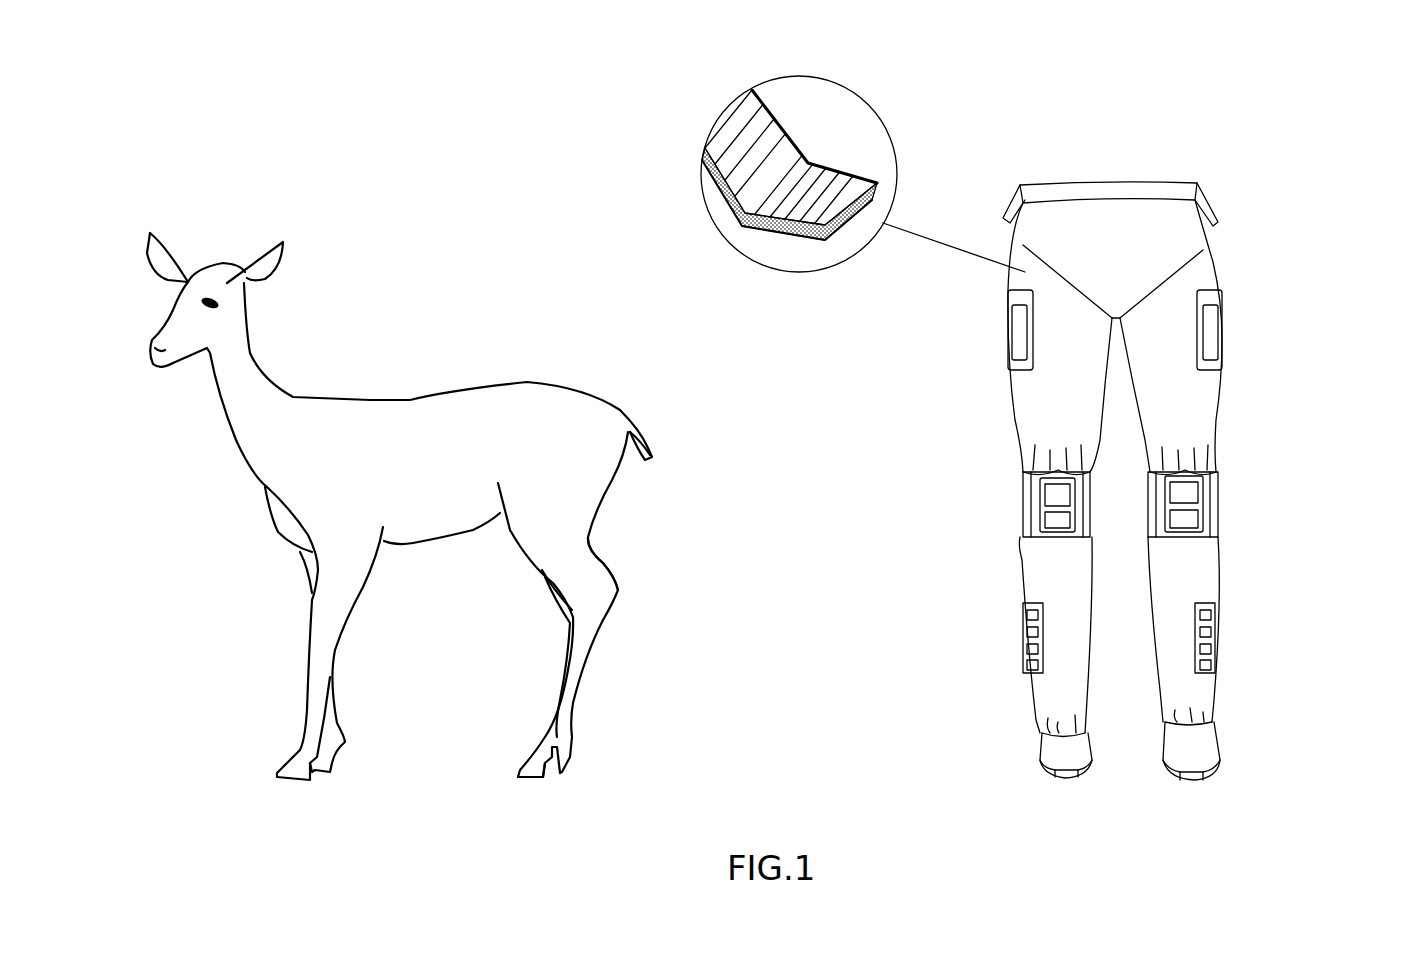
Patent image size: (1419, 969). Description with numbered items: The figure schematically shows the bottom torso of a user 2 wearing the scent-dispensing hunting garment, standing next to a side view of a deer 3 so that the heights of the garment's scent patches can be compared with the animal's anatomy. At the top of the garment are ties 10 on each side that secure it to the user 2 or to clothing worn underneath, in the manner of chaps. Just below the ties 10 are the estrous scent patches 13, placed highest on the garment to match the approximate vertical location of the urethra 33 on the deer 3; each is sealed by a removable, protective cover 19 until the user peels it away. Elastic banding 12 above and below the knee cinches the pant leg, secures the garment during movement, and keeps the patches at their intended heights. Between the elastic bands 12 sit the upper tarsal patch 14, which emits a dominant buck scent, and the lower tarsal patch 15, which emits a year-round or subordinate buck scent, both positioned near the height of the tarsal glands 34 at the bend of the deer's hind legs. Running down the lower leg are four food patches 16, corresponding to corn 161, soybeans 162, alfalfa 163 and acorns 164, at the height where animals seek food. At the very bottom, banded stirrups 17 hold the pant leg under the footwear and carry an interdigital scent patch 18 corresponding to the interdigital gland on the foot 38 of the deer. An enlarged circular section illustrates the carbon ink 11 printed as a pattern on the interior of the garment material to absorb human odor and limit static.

The user 2 is at (1148, 451).
The deer 3 is at (310, 400).
The ties 10 is at (1012, 193).
The carbon ink 11 is at (790, 232).
The elastic banding 12 is at (1020, 460).
The estrous scent patches 13 is at (1215, 365).
The upper tarsal patch 14 is at (1057, 490).
The lower tarsal patch 15 is at (1055, 523).
The food patches 16 is at (1215, 607).
The banded stirrups 17 is at (1090, 750).
The interdigital scent patch 18 is at (1066, 777).
The protective cover 19 is at (1217, 331).
The urethra 33 is at (623, 455).
The tarsal glands 34 is at (612, 590).
The foot 38 is at (567, 760).
The corn patch 161 is at (1024, 616).
The soybeans patch 162 is at (1024, 632).
The alfalfa patch 163 is at (1024, 648).
The acorn patch 164 is at (1024, 664).